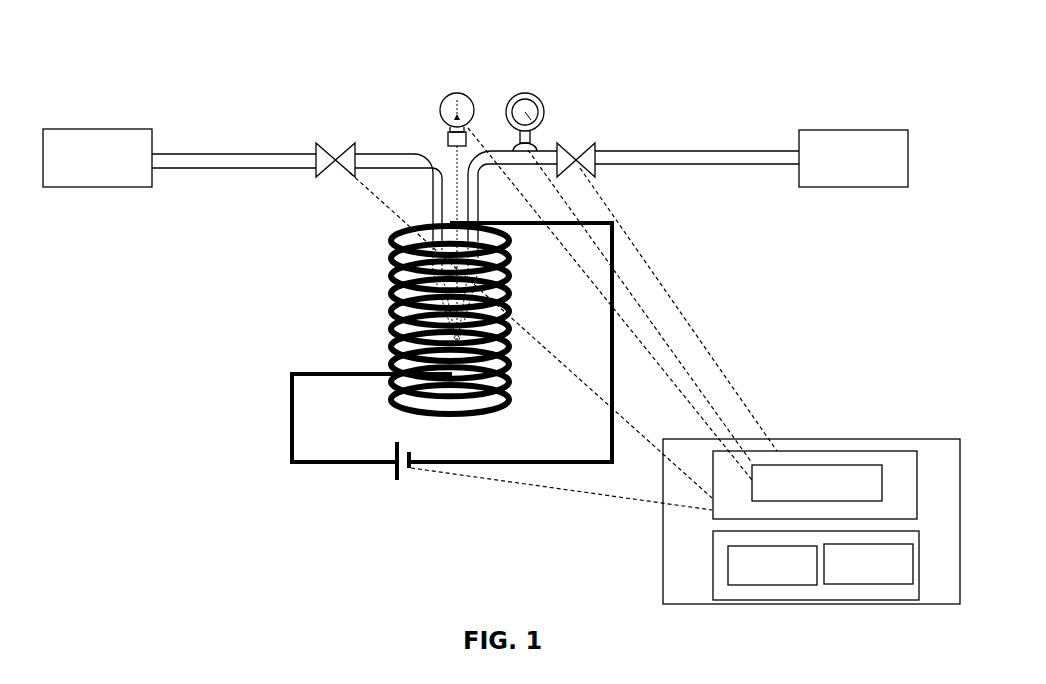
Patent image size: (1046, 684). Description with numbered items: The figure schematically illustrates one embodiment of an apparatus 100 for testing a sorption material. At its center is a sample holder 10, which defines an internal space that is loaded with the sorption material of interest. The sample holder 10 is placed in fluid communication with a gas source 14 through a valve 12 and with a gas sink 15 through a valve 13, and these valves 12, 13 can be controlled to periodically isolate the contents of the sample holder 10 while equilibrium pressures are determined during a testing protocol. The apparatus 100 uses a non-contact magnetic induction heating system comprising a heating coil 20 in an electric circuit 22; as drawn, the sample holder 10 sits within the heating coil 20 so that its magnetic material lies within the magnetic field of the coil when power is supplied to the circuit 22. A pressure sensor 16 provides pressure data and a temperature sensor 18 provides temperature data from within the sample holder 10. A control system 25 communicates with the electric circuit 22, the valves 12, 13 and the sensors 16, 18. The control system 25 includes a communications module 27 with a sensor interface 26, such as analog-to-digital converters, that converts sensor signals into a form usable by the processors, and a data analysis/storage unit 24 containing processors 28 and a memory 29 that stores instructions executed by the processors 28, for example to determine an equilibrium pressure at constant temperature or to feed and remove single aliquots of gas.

The apparatus 100 is at (188, 69).
The sample holder 10 is at (414, 224).
The valve 12 is at (338, 157).
The valve 13 is at (568, 149).
The gas source 14 is at (108, 169).
The gas sink 15 is at (865, 171).
The pressure sensor 16 is at (540, 98).
The temperature sensor 18 is at (443, 105).
The heating coil 20 is at (389, 290).
The electric circuit 22 is at (291, 418).
The data analysis/storage unit 24 is at (919, 548).
The control system 25 is at (838, 439).
The sensor interface 26 is at (828, 496).
The communications module 27 is at (918, 472).
The processors 28 is at (787, 578).
The memory 29 is at (879, 576).